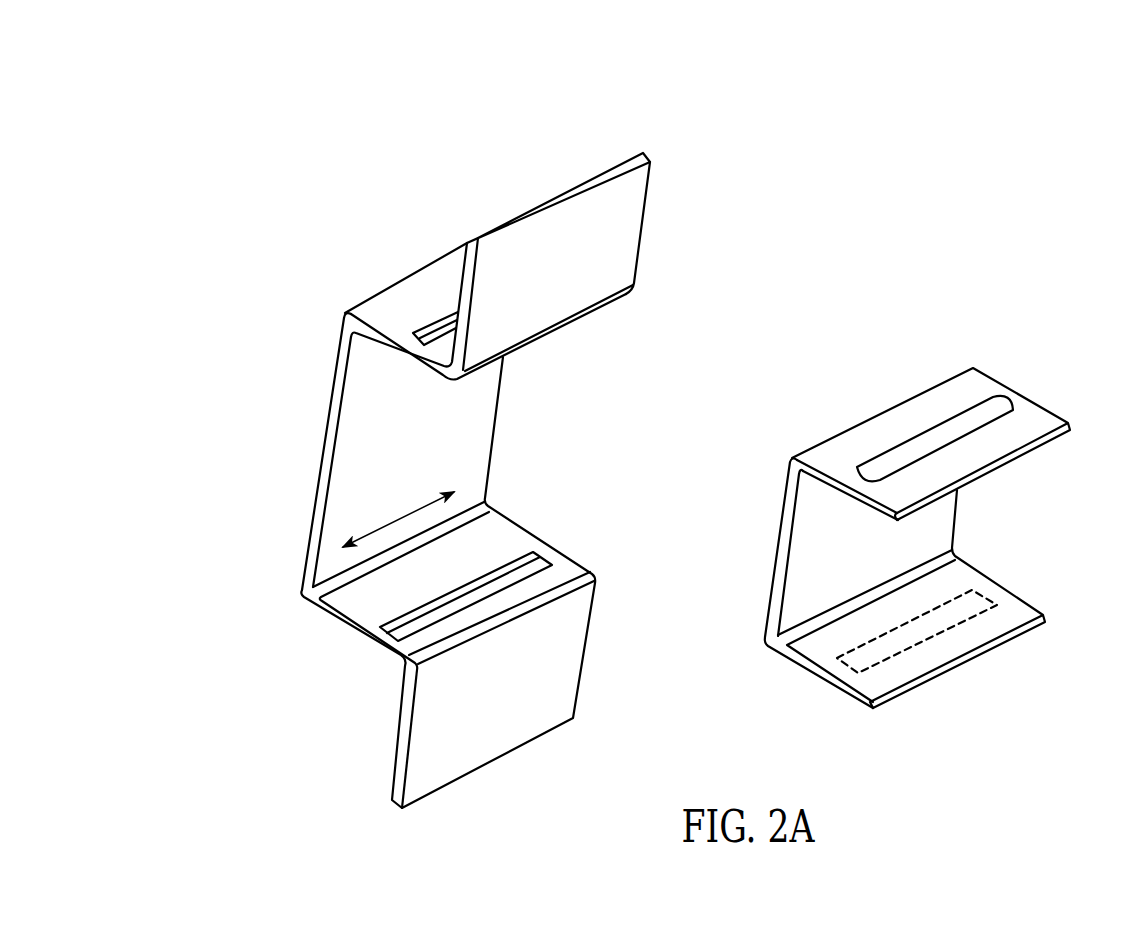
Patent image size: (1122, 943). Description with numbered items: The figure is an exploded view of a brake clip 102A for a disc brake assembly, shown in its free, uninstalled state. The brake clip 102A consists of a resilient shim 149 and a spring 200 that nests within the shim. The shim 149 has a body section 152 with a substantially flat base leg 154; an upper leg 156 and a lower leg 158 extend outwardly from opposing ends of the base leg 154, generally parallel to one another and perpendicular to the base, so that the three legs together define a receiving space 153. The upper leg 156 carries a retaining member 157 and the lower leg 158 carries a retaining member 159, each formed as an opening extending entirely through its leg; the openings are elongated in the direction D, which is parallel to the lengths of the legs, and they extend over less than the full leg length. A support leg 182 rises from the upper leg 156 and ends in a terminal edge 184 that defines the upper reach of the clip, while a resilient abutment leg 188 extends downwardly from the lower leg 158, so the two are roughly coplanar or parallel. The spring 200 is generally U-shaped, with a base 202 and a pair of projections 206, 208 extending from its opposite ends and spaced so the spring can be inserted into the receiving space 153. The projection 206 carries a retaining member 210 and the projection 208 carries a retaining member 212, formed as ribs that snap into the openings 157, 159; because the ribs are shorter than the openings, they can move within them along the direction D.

The brake clip 102A is at (250, 130).
The resilient shim 149 is at (280, 463).
The body section 152 is at (318, 650).
The receiving space 153 is at (500, 398).
The base leg 154 is at (483, 443).
The upper leg 156 is at (418, 297).
The retaining member 157 is at (425, 352).
The lower leg 158 is at (500, 534).
The retaining member 159 is at (553, 545).
The support leg 182 is at (628, 218).
The terminal edge 184 is at (547, 207).
The resilient abutment leg 188 is at (575, 648).
The direction D is at (398, 516).
The spring 200 is at (830, 368).
The base 202 is at (937, 515).
The projection 206 is at (993, 376).
The projection 208 is at (1013, 623).
The retaining member 210 is at (1026, 399).
The retaining member 212 is at (970, 593).